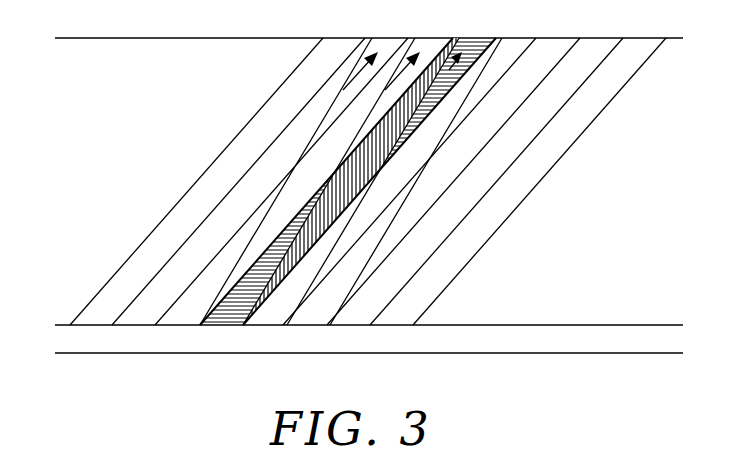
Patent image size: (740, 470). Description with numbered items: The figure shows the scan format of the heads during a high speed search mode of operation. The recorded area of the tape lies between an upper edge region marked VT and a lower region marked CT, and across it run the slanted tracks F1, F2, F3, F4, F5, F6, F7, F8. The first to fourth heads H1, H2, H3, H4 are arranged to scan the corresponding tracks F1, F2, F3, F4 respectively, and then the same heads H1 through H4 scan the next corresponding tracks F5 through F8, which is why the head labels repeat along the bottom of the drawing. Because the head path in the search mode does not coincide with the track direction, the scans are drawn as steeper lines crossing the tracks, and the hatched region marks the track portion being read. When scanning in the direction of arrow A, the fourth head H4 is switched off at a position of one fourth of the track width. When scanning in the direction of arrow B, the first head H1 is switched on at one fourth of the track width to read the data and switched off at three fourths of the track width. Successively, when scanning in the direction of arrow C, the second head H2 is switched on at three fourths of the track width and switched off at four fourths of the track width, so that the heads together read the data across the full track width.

The video track area / tape upper edge VT is at (187, 106).
The control track CT is at (594, 334).
The track F1 is at (196, 181).
The track F2 is at (238, 181).
The track F3 is at (281, 181).
The track F4 is at (326, 181).
The track F5 is at (369, 181).
The track F6 is at (409, 181).
The track F7 is at (453, 181).
The track F8 is at (518, 181).
The first head H1 is at (245, 196).
The second head H2 is at (287, 196).
The third head H3 is at (329, 196).
The fourth head H4 is at (304, 196).
The arrow A is at (371, 51).
The arrow B is at (413, 51).
The arrow C is at (467, 41).